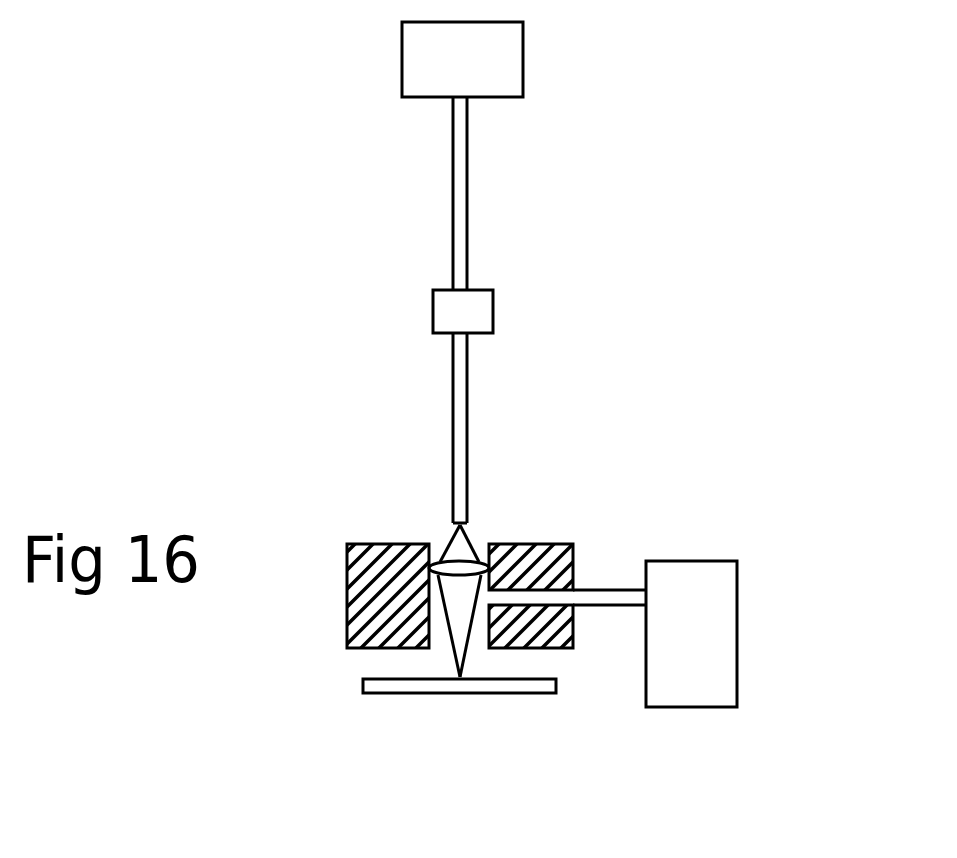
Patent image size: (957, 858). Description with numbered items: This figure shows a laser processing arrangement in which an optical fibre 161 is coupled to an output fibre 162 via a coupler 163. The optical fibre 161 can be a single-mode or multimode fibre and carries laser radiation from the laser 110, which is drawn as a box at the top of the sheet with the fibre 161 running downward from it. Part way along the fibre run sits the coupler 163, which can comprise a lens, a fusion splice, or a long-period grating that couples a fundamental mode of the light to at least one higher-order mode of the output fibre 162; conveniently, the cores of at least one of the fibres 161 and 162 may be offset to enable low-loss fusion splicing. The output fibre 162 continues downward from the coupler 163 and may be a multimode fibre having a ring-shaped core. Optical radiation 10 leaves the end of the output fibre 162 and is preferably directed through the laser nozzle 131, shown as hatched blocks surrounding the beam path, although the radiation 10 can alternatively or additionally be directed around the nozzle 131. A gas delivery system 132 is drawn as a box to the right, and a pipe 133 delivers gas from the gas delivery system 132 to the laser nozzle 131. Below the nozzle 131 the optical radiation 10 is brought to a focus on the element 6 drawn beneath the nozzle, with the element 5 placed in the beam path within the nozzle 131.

The laser 110 is at (523, 62).
The optical fibre 161 is at (455, 206).
The coupler 163 is at (493, 313).
The output fibre 162 is at (450, 380).
The optical radiation 10 is at (456, 535).
The lens 5 is at (467, 558).
The laser nozzle 131 is at (358, 542).
The pipe 133 is at (588, 590).
The gas delivery system 132 is at (737, 604).
The substrate 6 is at (360, 686).